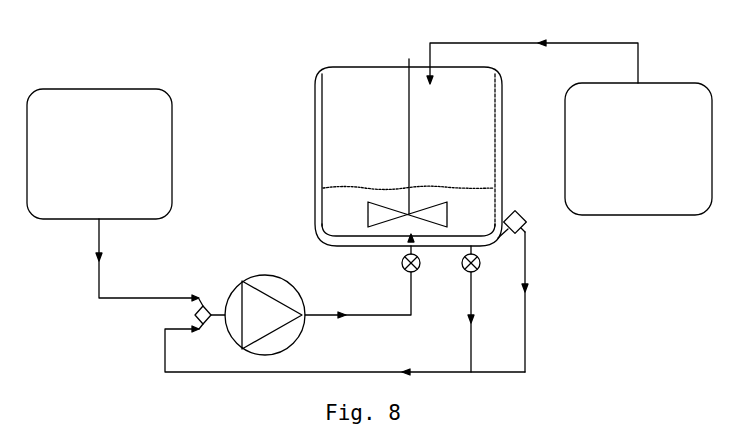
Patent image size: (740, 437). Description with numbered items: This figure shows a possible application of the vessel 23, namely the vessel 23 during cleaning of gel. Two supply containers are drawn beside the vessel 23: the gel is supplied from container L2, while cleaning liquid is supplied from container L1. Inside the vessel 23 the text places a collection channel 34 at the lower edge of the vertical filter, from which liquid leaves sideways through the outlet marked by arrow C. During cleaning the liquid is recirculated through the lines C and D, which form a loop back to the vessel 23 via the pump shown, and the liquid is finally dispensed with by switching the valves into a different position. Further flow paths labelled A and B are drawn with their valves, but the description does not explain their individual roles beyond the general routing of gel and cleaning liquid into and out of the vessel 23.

The vessel 23 is at (369, 199).
The collection channel 34 is at (344, 183).
The inlet line A is at (532, 53).
The outlet valve B is at (402, 255).
The outlet line C is at (521, 291).
The recirculation line D is at (464, 309).
The container L1 is at (99, 154).
The container L2 is at (638, 149).